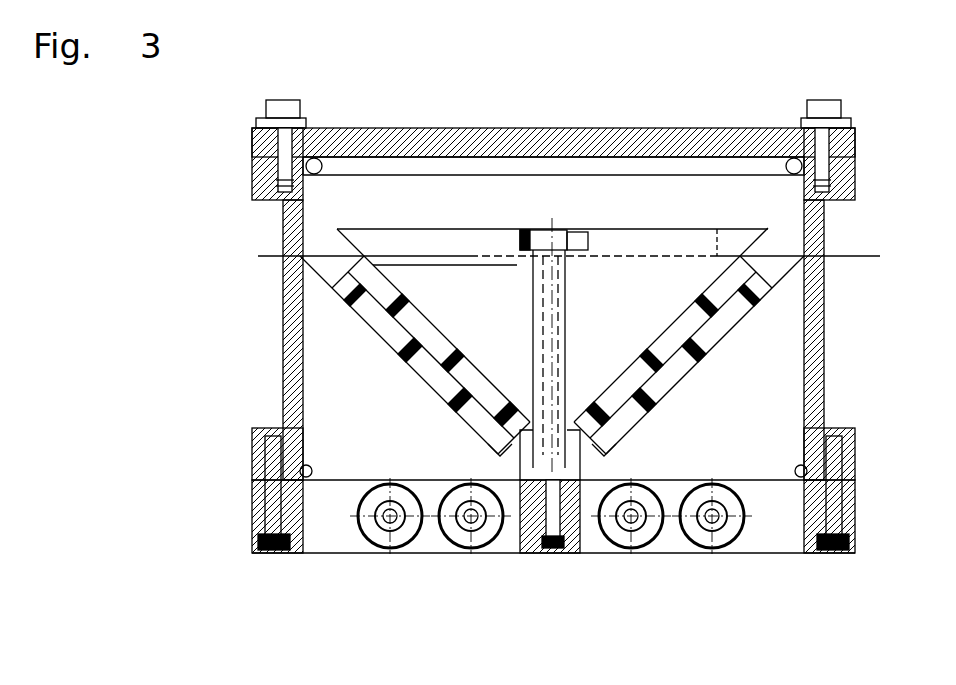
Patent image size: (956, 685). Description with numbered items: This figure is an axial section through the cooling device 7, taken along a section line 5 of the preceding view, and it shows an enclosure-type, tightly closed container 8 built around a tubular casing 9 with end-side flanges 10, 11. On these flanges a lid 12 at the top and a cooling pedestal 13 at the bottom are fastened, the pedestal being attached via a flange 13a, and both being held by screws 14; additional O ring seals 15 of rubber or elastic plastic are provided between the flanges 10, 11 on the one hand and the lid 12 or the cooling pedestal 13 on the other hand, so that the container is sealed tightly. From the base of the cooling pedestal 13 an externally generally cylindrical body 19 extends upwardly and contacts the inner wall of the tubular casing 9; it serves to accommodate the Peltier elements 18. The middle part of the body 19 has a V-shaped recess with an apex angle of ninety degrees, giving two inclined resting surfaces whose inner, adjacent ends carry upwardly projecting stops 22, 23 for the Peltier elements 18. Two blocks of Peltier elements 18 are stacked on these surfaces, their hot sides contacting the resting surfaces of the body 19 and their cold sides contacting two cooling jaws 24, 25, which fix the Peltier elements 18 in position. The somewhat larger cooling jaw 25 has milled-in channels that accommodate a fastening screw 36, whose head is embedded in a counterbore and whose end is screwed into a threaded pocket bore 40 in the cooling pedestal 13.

The spindle 5 is at (518, 253).
The cooling device 7 is at (148, 277).
The container 8 is at (511, 340).
The tubular casing 9 is at (300, 282).
The end-side flange 10 is at (494, 490).
The end-side flange 11 is at (265, 186).
The lid 12 is at (430, 128).
The cooling pedestal 13 is at (345, 522).
The flange 13a is at (262, 512).
The screws 14 is at (296, 108).
The O ring seals 15 is at (318, 175).
The Peltier elements 18 is at (388, 325).
The cylindrical body 19 is at (773, 412).
The stop 22 is at (486, 444).
The stop 23 is at (618, 444).
The cooling jaw 24 is at (418, 282).
The cooling jaw 25 is at (633, 342).
The fastening screw 36 is at (562, 238).
The threaded pocket bores 40 is at (556, 548).